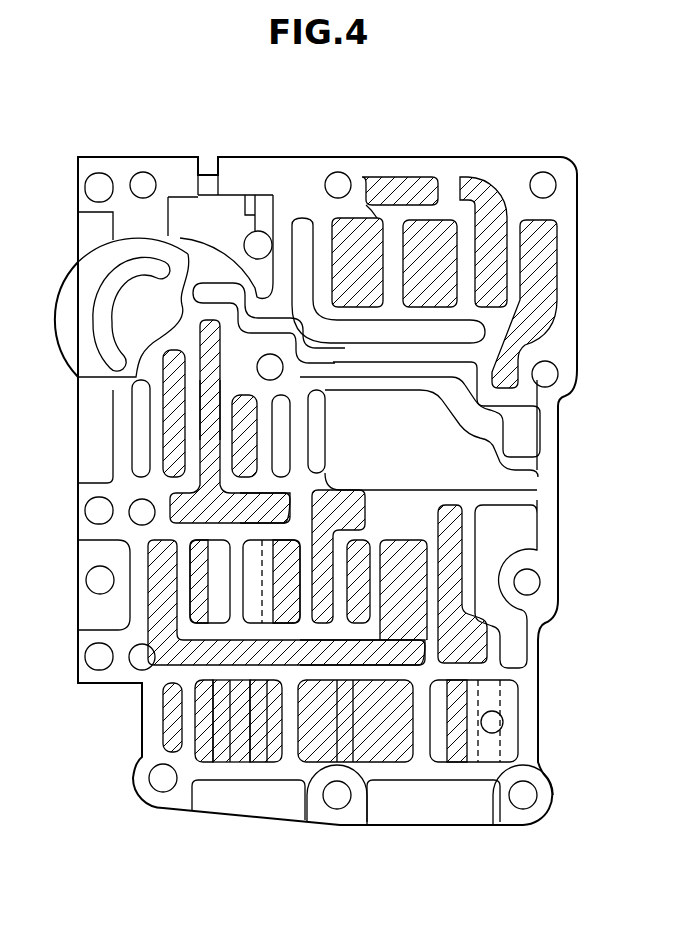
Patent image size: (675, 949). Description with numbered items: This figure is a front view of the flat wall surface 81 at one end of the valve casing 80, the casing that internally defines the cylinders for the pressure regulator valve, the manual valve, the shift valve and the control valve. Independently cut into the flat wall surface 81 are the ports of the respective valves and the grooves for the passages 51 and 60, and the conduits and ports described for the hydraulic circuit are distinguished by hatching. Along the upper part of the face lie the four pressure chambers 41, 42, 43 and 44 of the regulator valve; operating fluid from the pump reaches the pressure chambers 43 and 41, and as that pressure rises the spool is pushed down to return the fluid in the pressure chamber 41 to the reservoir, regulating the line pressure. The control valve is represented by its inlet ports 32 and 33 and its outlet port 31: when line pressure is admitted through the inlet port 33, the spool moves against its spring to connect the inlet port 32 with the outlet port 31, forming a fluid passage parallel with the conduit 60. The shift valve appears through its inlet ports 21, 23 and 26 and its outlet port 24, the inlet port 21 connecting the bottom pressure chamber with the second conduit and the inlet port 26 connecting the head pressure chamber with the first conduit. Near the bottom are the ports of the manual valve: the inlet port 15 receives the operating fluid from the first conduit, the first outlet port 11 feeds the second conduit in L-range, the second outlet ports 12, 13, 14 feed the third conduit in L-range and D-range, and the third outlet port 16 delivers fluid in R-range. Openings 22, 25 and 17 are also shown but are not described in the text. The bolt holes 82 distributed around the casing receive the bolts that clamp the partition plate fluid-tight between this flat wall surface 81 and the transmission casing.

The valve casing 80 is at (513, 178).
The flat wall surface 81 is at (397, 215).
The bolt holes 82 is at (340, 178).
The pressure chamber 41 is at (368, 277).
The pressure chamber 42 is at (443, 277).
The pressure chamber 43 is at (505, 277).
The pressure chamber 44 is at (549, 277).
The conduit 60 is at (200, 338).
The inlet port 32 is at (207, 413).
The outlet port 31 is at (173, 440).
The inlet port 33 is at (245, 420).
The passage 22 is at (262, 538).
The inlet port 21 is at (197, 575).
The inlet port 23 is at (287, 571).
The outlet port 24 is at (320, 588).
The passage 25 is at (358, 553).
The inlet port 26 is at (410, 553).
The first outlet port 11 is at (170, 722).
The second outlet port 12 is at (208, 763).
The second outlet port 13 is at (238, 763).
The second outlet port 14 is at (270, 763).
The inlet port 15 is at (348, 716).
The passage 51 is at (368, 652).
The third outlet port 16 is at (457, 744).
The passage 17 is at (497, 694).